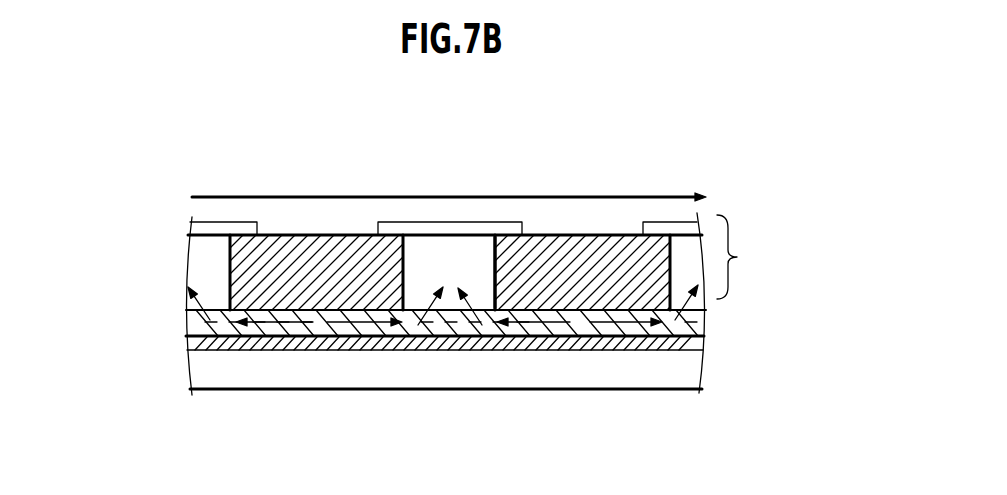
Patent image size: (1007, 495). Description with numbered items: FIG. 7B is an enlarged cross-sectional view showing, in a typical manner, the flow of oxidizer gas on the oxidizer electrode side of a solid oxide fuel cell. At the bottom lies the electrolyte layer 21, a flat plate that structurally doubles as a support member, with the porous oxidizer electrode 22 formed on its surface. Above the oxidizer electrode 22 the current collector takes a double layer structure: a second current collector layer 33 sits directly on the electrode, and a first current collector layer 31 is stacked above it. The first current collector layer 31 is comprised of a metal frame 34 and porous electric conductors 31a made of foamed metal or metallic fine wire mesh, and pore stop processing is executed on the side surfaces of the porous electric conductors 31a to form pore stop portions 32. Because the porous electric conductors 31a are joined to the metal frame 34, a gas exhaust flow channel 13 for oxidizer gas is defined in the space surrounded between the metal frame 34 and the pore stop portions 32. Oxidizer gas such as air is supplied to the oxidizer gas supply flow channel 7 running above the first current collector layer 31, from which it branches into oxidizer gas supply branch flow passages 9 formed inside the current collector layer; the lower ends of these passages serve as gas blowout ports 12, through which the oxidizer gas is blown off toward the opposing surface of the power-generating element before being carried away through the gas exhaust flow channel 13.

The oxidizer gas supply flow channel 7 is at (424, 196).
The oxidizer gas supply branch flow passage 9 is at (317, 293).
The gas blowout port 12 is at (316, 304).
The gas exhaust flow channel 13 is at (468, 282).
The electrolyte layer 21 is at (690, 377).
The oxidizer electrode 22 is at (690, 345).
The first current collector layer 31 is at (479, 218).
The porous electric conductor 31a is at (624, 234).
The pore stop portion 32 is at (493, 236).
The second current collector layer 33 is at (690, 318).
The metal frame 34 is at (383, 222).